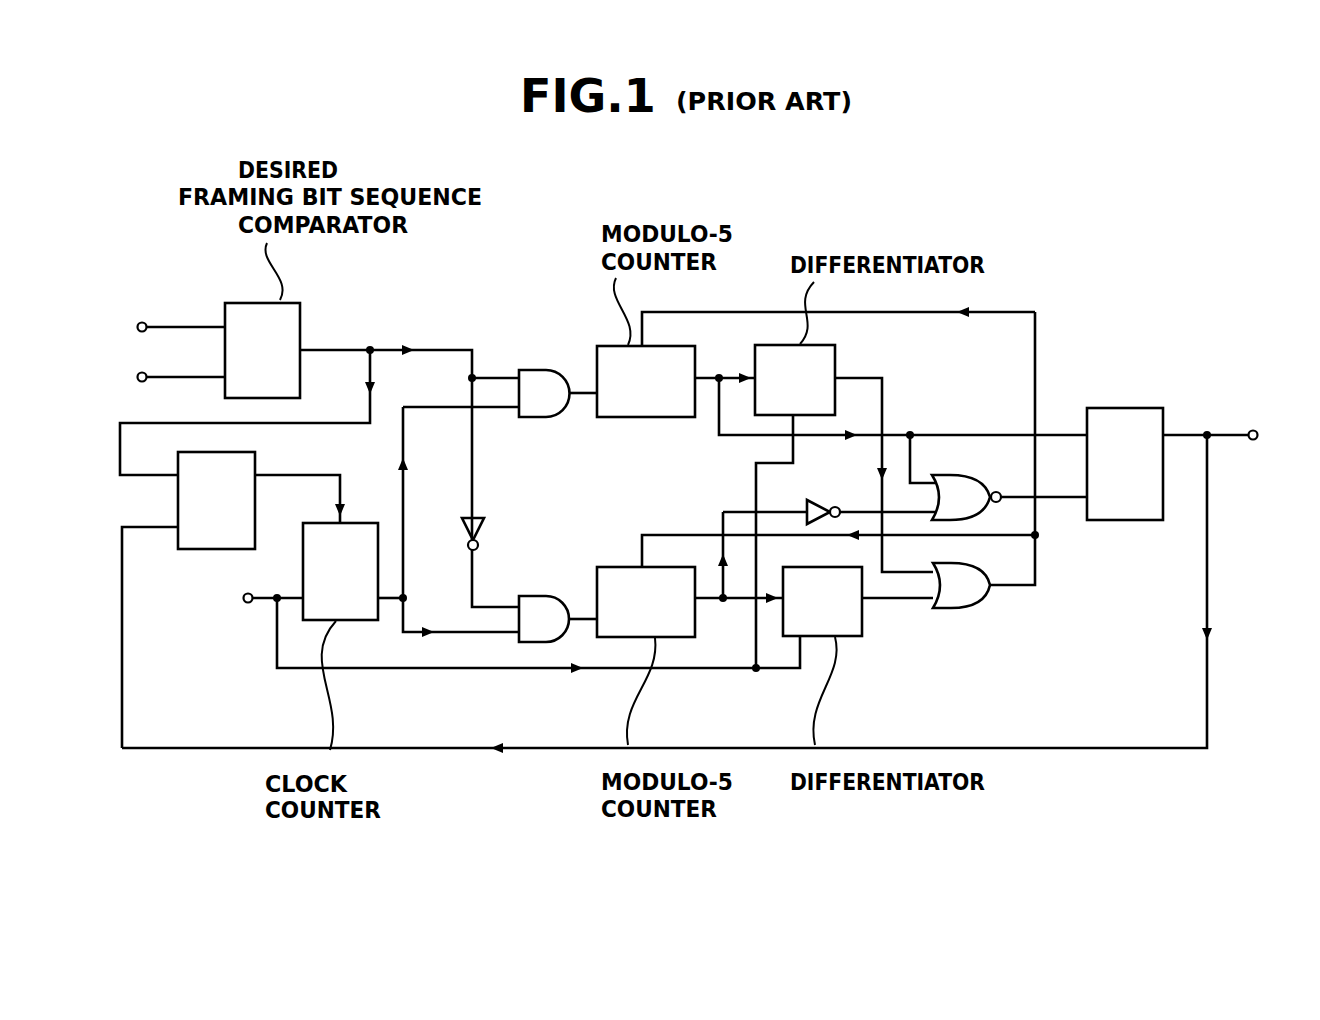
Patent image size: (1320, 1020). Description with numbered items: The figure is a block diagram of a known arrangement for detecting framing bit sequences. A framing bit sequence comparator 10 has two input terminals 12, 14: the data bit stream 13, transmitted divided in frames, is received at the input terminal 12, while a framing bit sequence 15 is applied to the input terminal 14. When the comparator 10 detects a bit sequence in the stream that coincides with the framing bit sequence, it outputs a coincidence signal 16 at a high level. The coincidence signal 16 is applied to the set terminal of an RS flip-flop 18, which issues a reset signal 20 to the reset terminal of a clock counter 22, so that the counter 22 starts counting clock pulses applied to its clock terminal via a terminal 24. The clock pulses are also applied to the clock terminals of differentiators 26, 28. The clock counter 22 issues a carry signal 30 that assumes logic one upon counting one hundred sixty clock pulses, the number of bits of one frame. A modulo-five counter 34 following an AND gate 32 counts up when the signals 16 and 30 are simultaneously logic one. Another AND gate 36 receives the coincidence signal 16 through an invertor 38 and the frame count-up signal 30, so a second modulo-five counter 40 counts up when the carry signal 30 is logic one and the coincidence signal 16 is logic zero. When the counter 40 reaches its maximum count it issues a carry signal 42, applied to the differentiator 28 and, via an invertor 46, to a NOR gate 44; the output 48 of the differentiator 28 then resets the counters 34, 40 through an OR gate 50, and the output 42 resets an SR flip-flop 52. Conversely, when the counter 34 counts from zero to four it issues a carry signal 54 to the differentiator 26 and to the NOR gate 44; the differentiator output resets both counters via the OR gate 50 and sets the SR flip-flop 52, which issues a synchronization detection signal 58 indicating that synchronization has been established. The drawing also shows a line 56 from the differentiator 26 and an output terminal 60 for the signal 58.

The framing bit sequence comparator 10 is at (302, 330).
The input terminal 12 is at (140, 322).
The data bit stream 13 is at (178, 326).
The input terminal 14 is at (140, 372).
The framing bit sequence 15 is at (176, 378).
The coincidence signal 16 is at (447, 348).
The RS flip-flop 18 is at (176, 508).
The reset signal 20 is at (288, 476).
The clock counter 22 is at (358, 524).
The terminal 24 is at (244, 600).
The differentiator 26 is at (836, 358).
The differentiator 28 is at (836, 637).
The carry signal 30 is at (406, 530).
The AND gate 32 is at (552, 370).
The modulo-5 counter 34 is at (612, 418).
The AND gate 36 is at (552, 596).
The invertor 38 is at (482, 530).
The modulo-5 counter 40 is at (628, 566).
The carry signal 42 is at (722, 514).
The NOR gate 44 is at (942, 478).
The invertor 46 is at (836, 496).
The output 48 is at (878, 600).
The OR gate 50 is at (955, 609).
The SR flip-flop 52 is at (1125, 407).
The carry signal 54 is at (718, 376).
The first differentiator output line 56 is at (883, 392).
The synchronization detection signal 58 is at (1176, 432).
The output terminal 60 is at (1258, 433).